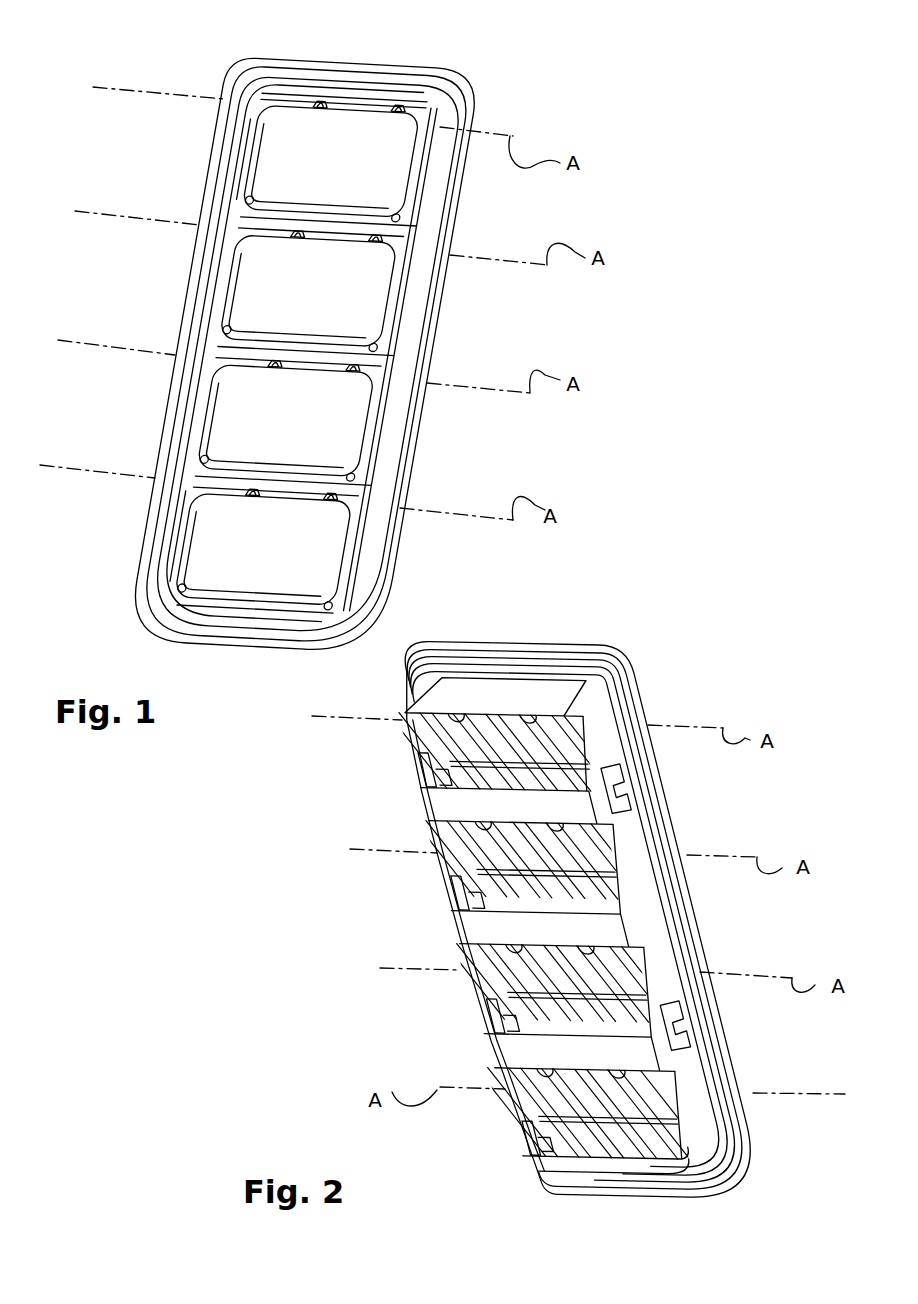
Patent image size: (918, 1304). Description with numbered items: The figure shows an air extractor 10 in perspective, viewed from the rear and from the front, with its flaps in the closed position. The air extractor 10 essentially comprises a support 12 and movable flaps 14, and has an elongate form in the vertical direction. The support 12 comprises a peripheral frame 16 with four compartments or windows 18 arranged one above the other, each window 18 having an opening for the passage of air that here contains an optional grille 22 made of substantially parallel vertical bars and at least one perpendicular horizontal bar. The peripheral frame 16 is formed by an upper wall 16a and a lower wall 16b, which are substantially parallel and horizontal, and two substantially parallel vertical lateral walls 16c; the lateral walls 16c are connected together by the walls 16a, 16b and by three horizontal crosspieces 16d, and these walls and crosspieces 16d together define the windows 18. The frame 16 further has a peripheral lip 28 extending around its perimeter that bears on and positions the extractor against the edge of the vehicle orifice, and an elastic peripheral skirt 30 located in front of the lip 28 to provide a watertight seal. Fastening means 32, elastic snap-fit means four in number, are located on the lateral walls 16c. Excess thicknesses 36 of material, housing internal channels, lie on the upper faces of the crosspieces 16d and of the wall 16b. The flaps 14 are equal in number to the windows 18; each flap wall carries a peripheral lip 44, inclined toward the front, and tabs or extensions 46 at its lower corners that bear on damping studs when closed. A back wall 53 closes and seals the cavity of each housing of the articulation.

In FIG. 1, the air extractor 10 is at (512, 106).
In FIG. 2, the air extractor 10 is at (660, 643).
In FIG. 1, the support 12 is at (221, 90).
In FIG. 2, the support 12 is at (664, 770).
In FIG. 1, the movable flaps 14 is at (395, 182).
In FIG. 2, the movable flaps 14 is at (597, 880).
In FIG. 1, the peripheral frame 16 is at (412, 315).
In FIG. 2, the peripheral frame 16 is at (617, 658).
In FIG. 1, the upper wall 16a is at (347, 102).
In FIG. 2, the upper wall 16a is at (505, 700).
In FIG. 1, the lower wall 16b is at (205, 612).
In FIG. 2, the lower wall 16b is at (632, 1172).
In FIG. 1, the lateral walls 16c is at (240, 268).
In FIG. 2, the lateral walls 16c is at (665, 992).
In FIG. 1, the crosspieces 16d is at (235, 367).
In FIG. 2, the crosspieces 16d is at (478, 965).
In FIG. 1, the windows 18 is at (245, 145).
In FIG. 2, the windows 18 is at (462, 808).
In FIG. 2, the grille 22 is at (585, 735).
In FIG. 1, the peripheral lip 28 is at (445, 97).
In FIG. 2, the peripheral lip 28 is at (722, 1024).
In FIG. 2, the elastic peripheral skirt 30 is at (685, 962).
In FIG. 2, the fastening means 32 is at (672, 1017).
In FIG. 2, the excess thicknesses of material 36 is at (470, 792).
In FIG. 1, the peripheral lip of the flap wall 44 is at (317, 348).
In FIG. 1, the tab or extension 46 is at (395, 218).
In FIG. 2, the back wall 53 is at (457, 718).